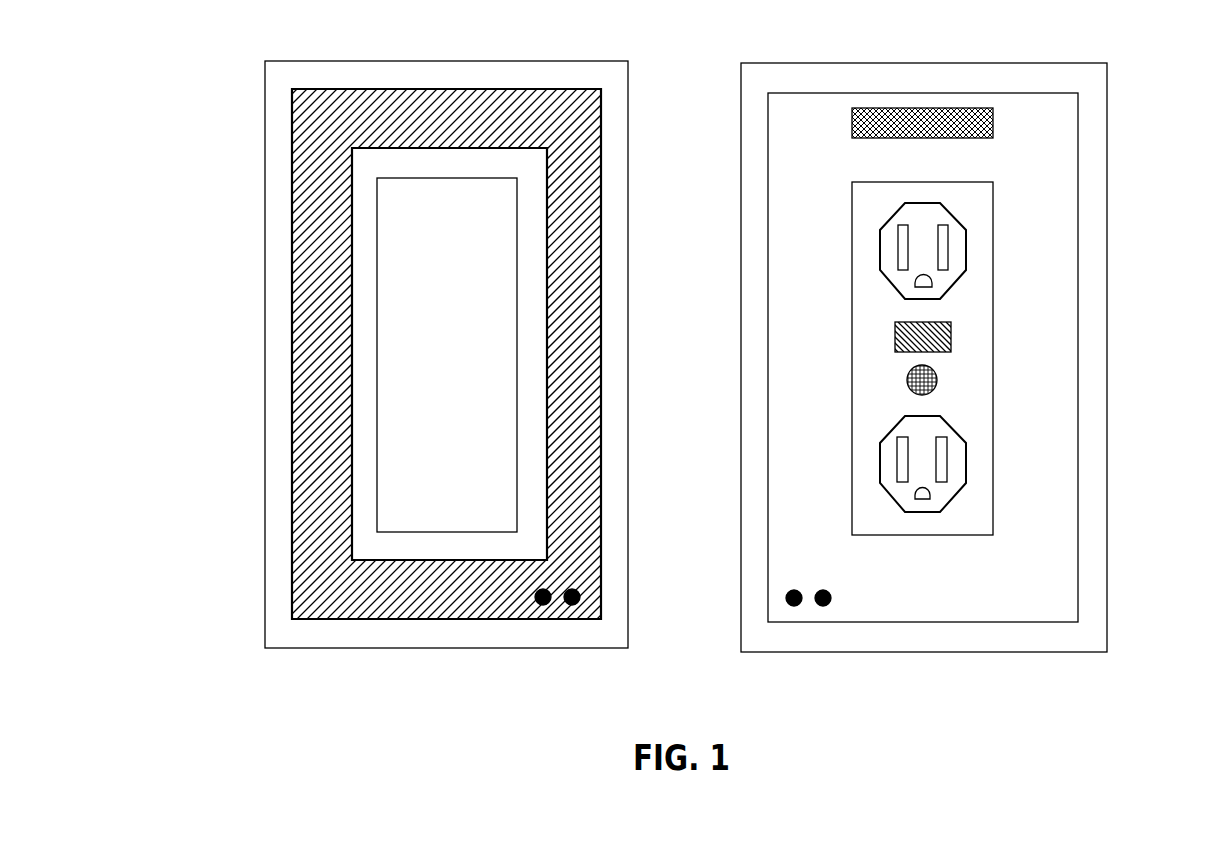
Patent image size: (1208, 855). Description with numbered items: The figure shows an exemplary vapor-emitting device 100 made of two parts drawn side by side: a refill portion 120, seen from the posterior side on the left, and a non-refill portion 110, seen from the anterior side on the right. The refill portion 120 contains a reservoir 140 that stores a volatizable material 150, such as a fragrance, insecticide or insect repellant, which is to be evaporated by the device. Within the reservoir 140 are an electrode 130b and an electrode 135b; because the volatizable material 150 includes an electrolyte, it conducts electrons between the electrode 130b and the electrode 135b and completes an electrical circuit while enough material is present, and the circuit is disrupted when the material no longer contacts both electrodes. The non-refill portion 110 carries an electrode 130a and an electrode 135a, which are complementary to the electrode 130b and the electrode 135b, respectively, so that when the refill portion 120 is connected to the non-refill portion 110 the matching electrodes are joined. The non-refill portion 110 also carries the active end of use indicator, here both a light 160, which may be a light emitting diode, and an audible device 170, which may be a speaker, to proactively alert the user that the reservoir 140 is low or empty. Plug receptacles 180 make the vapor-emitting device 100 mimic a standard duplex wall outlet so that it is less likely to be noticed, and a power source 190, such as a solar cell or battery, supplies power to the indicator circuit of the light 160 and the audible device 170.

The vapor-emitting device 100 is at (233, 62).
The non-refill portion 110 is at (914, 63).
The refill portion 120 is at (438, 61).
The electrode 130a is at (826, 607).
The electrode 130b is at (541, 606).
The electrode 135a is at (791, 607).
The electrode 135b is at (574, 606).
The reservoir 140 is at (292, 367).
The volatizable material 150 is at (315, 263).
The light 160 is at (951, 327).
The audible device 170 is at (936, 370).
The plug receptacles 180 is at (966, 247).
The power source 190 is at (893, 108).